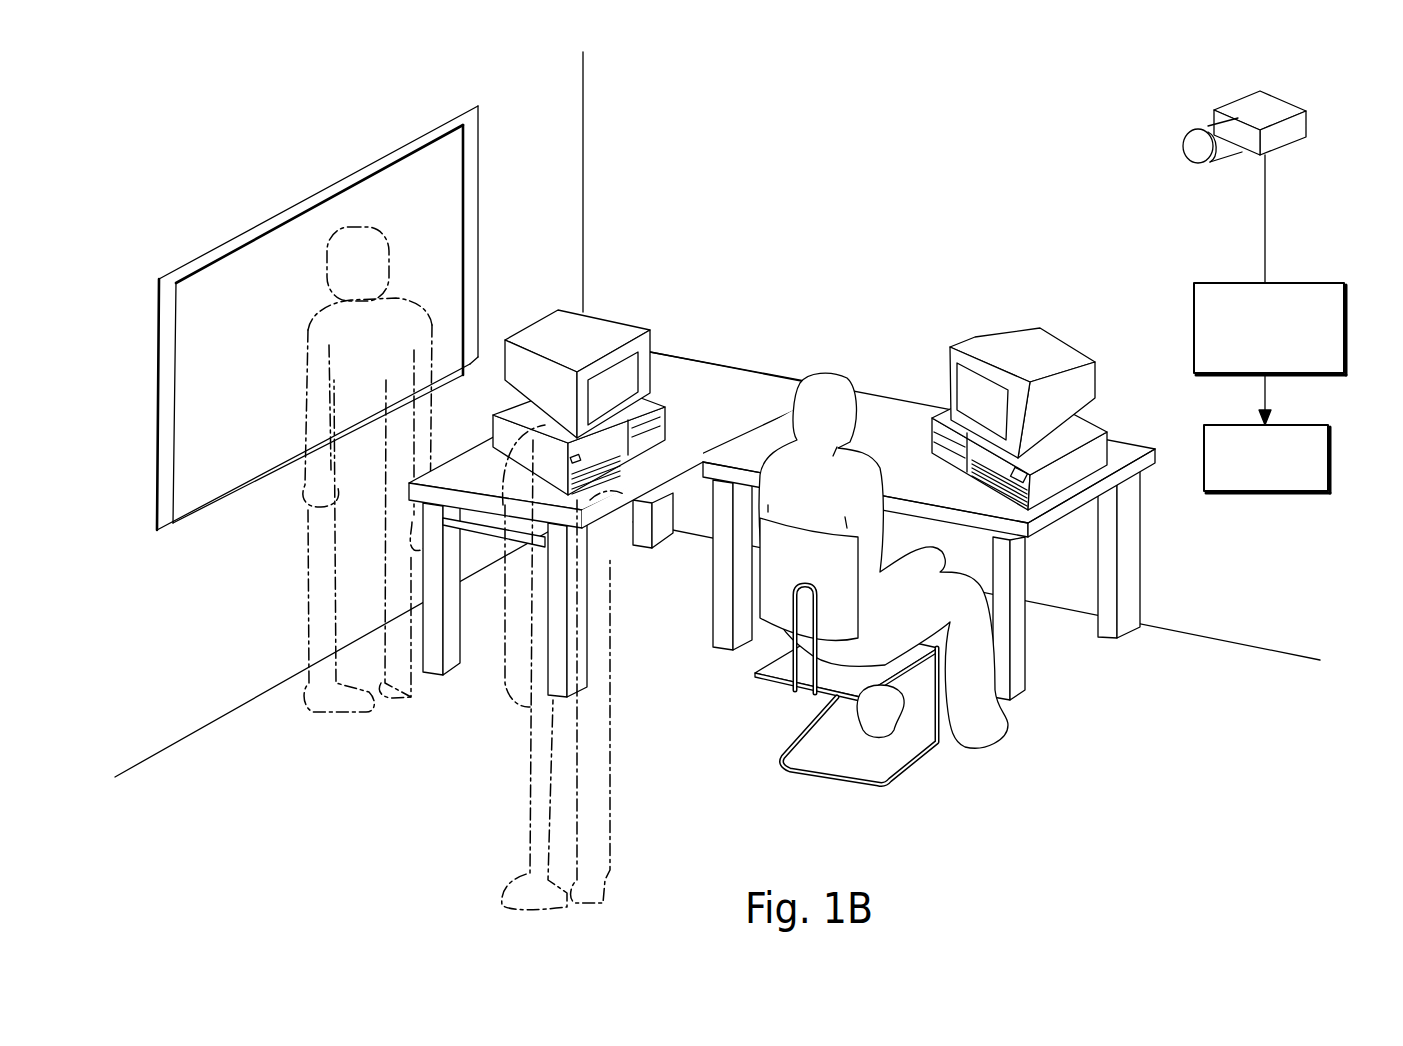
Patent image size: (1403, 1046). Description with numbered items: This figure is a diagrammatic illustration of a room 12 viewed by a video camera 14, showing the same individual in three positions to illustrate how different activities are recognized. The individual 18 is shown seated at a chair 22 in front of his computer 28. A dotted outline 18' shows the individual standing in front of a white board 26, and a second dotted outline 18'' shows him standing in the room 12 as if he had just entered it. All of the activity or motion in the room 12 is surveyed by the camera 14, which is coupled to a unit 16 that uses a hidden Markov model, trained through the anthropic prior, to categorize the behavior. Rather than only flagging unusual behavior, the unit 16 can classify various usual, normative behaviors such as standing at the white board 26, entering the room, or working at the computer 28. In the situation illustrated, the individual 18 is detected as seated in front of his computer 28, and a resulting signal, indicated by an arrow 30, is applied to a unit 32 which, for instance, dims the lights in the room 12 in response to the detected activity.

The room 12 is at (386, 837).
The video camera 14 is at (1243, 102).
The unit 16 is at (1289, 283).
The individual 18 is at (885, 587).
The individual 18' is at (416, 469).
The individual 18'' is at (591, 667).
The chair 22 is at (777, 683).
The white board 26 is at (452, 205).
The computer 28 is at (1028, 340).
The arrow 30 is at (1265, 392).
The unit 32 is at (1322, 472).